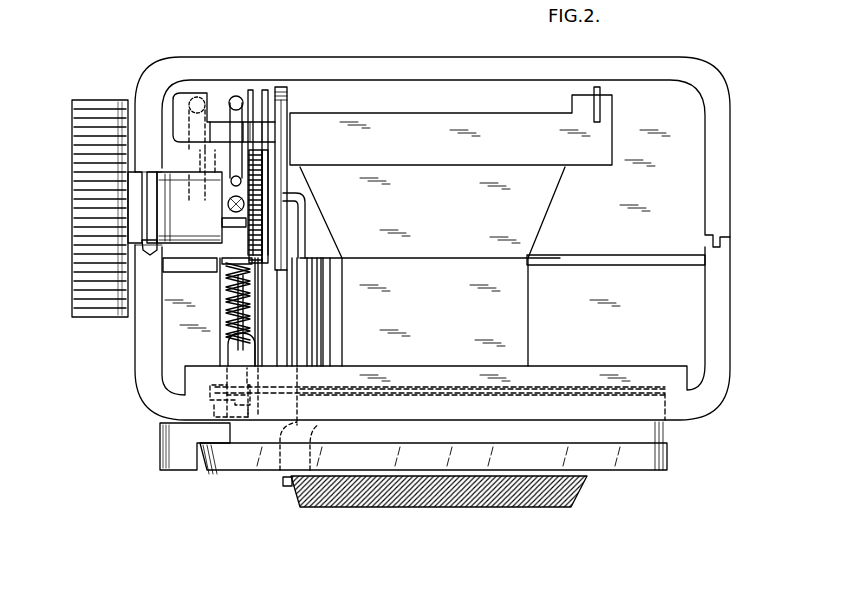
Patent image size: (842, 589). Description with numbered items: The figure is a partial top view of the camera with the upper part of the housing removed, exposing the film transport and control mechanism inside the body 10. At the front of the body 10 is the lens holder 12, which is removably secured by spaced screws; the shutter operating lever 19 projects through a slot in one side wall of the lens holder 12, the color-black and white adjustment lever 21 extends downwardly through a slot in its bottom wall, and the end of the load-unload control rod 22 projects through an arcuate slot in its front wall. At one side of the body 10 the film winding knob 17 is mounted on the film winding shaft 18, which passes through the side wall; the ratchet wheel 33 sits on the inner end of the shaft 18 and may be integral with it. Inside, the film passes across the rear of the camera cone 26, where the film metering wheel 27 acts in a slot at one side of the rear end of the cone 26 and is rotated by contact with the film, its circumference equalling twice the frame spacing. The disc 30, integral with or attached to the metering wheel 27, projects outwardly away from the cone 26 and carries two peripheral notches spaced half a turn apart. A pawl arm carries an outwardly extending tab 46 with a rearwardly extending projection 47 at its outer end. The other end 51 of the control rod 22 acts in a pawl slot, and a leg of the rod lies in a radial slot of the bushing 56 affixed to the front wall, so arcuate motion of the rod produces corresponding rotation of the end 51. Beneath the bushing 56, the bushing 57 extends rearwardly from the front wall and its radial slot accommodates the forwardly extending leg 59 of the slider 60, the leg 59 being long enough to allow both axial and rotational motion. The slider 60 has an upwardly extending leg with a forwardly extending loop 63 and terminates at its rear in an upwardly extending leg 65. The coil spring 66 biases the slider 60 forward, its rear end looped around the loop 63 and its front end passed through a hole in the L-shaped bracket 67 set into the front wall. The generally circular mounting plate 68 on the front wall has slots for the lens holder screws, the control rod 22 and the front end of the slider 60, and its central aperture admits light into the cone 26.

The body 10 is at (182, 57).
The lens holder 12 is at (578, 496).
The film winding knob 17 is at (77, 187).
The film winding shaft 18 is at (137, 211).
The shutter operating lever 19 is at (167, 450).
The color-black and white adjustment lever 21 is at (427, 0).
The load-unload control rod 22 is at (283, 485).
The camera cone 26 is at (540, 220).
The film metering wheel 27 is at (282, 96).
The disc 30 is at (284, 155).
The ratchet wheel 33 is at (256, 228).
The tab 46 is at (217, 138).
The projection 47 is at (182, 108).
The end of control rod 51 is at (284, 197).
The bushing 56 is at (315, 309).
The bushing 57 is at (227, 312).
The leg 59 is at (228, 348).
The slider 60 is at (237, 92).
The loop 63 is at (232, 205).
The leg 65 is at (232, 98).
The coil spring 66 is at (226, 283).
The bracket 67 is at (257, 383).
The mounting plate 68 is at (564, 388).